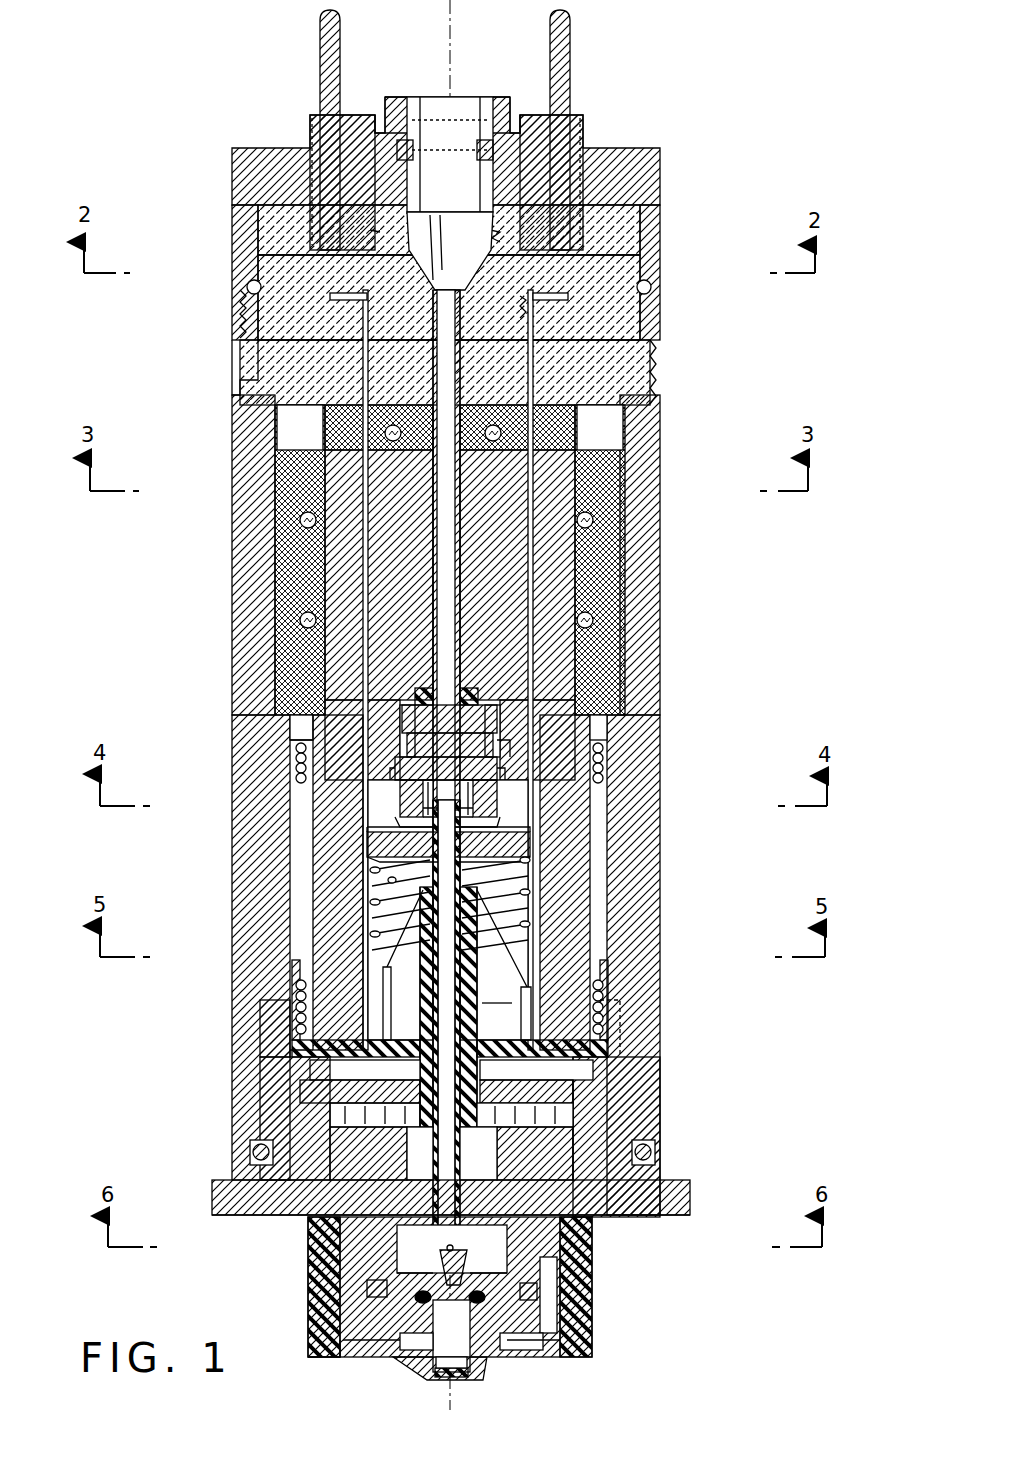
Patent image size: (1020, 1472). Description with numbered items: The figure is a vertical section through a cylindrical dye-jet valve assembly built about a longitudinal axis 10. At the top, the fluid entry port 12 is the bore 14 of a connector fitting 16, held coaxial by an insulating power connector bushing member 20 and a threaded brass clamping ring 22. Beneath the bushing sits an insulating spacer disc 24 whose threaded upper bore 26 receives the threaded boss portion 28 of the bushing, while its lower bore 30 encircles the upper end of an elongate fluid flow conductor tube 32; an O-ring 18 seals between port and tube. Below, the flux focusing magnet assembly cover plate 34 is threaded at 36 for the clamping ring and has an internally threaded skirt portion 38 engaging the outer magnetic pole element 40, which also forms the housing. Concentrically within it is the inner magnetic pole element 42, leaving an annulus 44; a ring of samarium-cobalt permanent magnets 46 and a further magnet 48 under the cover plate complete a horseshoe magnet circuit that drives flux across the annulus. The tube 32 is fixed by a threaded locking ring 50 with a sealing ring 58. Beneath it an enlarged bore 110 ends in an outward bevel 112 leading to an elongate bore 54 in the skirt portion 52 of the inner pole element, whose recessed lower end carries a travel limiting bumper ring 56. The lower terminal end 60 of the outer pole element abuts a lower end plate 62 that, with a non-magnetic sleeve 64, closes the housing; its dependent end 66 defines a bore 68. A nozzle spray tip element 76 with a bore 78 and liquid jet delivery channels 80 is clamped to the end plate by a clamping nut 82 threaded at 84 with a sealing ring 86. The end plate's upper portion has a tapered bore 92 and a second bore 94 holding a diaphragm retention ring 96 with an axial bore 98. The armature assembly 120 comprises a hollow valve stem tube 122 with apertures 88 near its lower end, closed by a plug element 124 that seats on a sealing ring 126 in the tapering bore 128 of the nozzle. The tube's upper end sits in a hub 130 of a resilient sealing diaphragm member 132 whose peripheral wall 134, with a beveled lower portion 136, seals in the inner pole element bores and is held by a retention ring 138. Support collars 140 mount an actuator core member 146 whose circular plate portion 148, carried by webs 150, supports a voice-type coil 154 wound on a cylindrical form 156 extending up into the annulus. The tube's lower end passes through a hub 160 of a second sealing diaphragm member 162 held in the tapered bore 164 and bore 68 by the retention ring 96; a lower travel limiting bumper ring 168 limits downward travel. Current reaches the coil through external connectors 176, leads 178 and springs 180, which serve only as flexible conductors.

The longitudinal axis 10 is at (453, 5).
The fluid entry port 12 is at (455, 120).
The bore 14 is at (412, 108).
The connector fitting 16 is at (322, 132).
The O-ring 18 is at (470, 280).
The power connector bushing member 20 is at (545, 135).
The clamping ring 22 is at (650, 162).
The insulating spacer disc 24 is at (290, 272).
The threaded upper bore 26 is at (362, 222).
The threaded boss portion 28 is at (478, 240).
The lower bore 30 is at (262, 306).
The fluid flow conductor tube 32 is at (470, 290).
The magnet assembly cover plate 34 is at (625, 357).
The peripheral thread 36 is at (252, 382).
The dependent skirt portion 38 is at (650, 386).
The outer magnetic pole element 40 is at (645, 577).
The inner magnetic pole element 42 is at (565, 520).
The annulus 44 is at (300, 727).
The permanent magnets 46 is at (300, 510).
The permanent magnet 48 is at (600, 425).
The threaded locking ring 50 is at (475, 718).
The dependent skirt portion 52 is at (565, 905).
The elongate bore 54 is at (478, 895).
The travel limiting bumper ring 56 is at (592, 1000).
The sealing ring 58 is at (480, 695).
The lower terminal end 60 is at (625, 1042).
The lower end plate 62 is at (600, 1082).
The non-magnetic sleeve 64 is at (615, 1062).
The dependent end 66 is at (650, 1190).
The bore 68 is at (400, 1265).
The nozzle spray tip element 76 is at (420, 1330).
The bore 78 is at (415, 1362).
The liquid jet delivery channels 80 is at (472, 1366).
The clamping nut 82 is at (590, 1320).
The threaded engagement 84 is at (580, 1245).
The sealing ring 86 is at (537, 1290).
The apertures 88 is at (440, 1252).
The tapered bore 92 is at (300, 1060).
The second bore 94 is at (300, 1088).
The diaphragm retention ring 96 is at (560, 1112).
The axial bore 98 is at (462, 1170).
The enlarged bore 110 is at (498, 770).
The outward bevel 112 is at (482, 812).
The armature assembly 120 is at (400, 900).
The hollow valve stem tube 122 is at (462, 857).
The plug element 124 is at (340, 1348).
The sealing ring 126 is at (552, 1300).
The tapering bore 128 is at (416, 1296).
The hub 130 is at (325, 800).
The resilient sealing diaphragm member 132 is at (298, 770).
The peripheral flange or wall 134 is at (485, 795).
The beveled lower portion 136 is at (400, 815).
The retention ring 138 is at (502, 834).
The support collars 140 is at (395, 838).
The actuator core member 146 is at (410, 925).
The circular plate portion 148 is at (292, 1035).
The webs 150 is at (506, 1041).
The coil 154 is at (508, 772).
The cylindrical form 156 is at (515, 752).
The hub 160 is at (420, 1240).
The second resilient sealing diaphragm member 162 is at (400, 1162).
The tapered bore 164 is at (400, 1196).
The lower travel limiting bumper ring 168 is at (385, 988).
The external connectors 176 is at (330, 42).
The leads 178 is at (250, 318).
The springs 180 is at (388, 876).